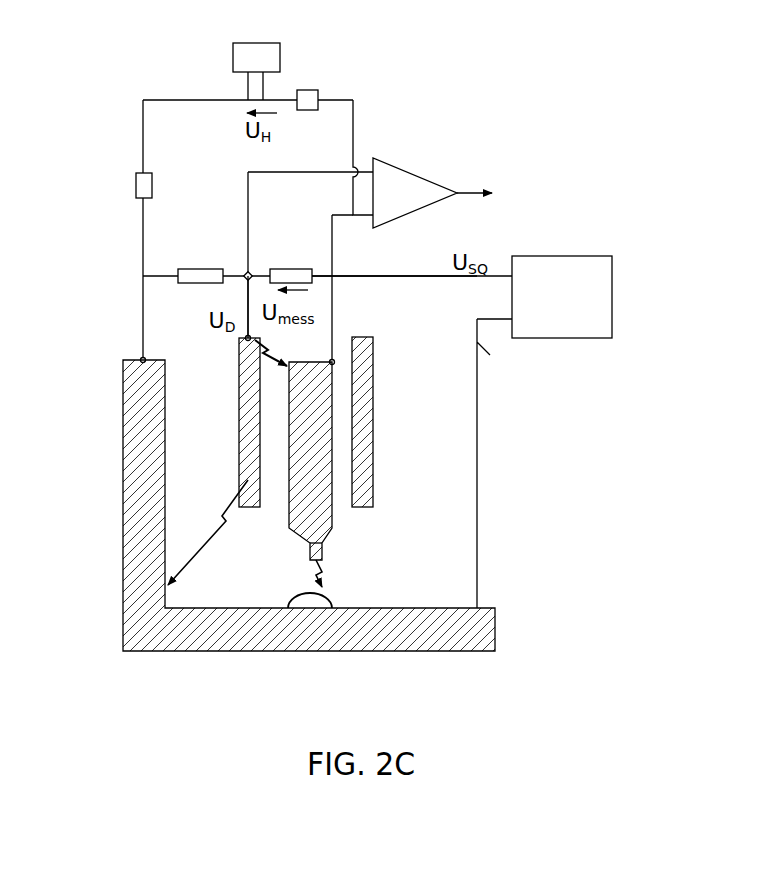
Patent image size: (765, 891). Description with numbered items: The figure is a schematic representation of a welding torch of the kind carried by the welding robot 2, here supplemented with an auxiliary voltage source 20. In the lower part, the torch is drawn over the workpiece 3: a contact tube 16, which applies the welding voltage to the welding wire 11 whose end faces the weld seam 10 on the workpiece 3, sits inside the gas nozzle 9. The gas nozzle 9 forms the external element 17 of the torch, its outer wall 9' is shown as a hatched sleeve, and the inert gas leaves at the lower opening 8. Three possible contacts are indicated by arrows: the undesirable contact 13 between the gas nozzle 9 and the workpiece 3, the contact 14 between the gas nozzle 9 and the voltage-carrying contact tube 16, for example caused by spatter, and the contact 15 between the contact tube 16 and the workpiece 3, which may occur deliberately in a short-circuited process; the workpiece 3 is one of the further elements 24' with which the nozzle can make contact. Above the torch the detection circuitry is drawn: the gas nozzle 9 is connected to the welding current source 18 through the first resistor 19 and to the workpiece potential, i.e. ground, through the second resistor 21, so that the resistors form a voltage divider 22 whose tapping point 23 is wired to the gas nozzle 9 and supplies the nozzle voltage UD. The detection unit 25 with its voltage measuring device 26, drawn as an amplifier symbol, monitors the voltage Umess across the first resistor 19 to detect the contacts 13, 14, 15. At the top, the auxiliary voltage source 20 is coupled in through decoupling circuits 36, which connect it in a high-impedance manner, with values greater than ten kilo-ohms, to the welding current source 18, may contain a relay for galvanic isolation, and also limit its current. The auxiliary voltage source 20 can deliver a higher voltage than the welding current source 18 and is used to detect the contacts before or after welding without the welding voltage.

The welding robot 2 is at (397, 342).
The workpiece 3 is at (300, 505).
The lower opening 8 is at (344, 479).
The gas nozzle 9 is at (392, 422).
The outer wall 9' is at (228, 422).
The weld seam 10 is at (300, 600).
The welding wire 11 is at (305, 555).
The contact 13 is at (192, 562).
The contact 14 is at (265, 352).
The contact 15 is at (328, 567).
The contact tube 16 is at (186, 575).
The external element 17 is at (375, 487).
The welding current source 18 is at (605, 268).
The first resistor 19 is at (333, 273).
The auxiliary voltage source 20 is at (255, 50).
The second resistor 21 is at (197, 270).
The voltage divider 22 is at (235, 238).
The tapping point 23 is at (248, 270).
The further element 24' is at (279, 505).
The detection unit 25 is at (432, 166).
The voltage measuring device 26 is at (416, 188).
The decoupling circuit 36 is at (305, 90).